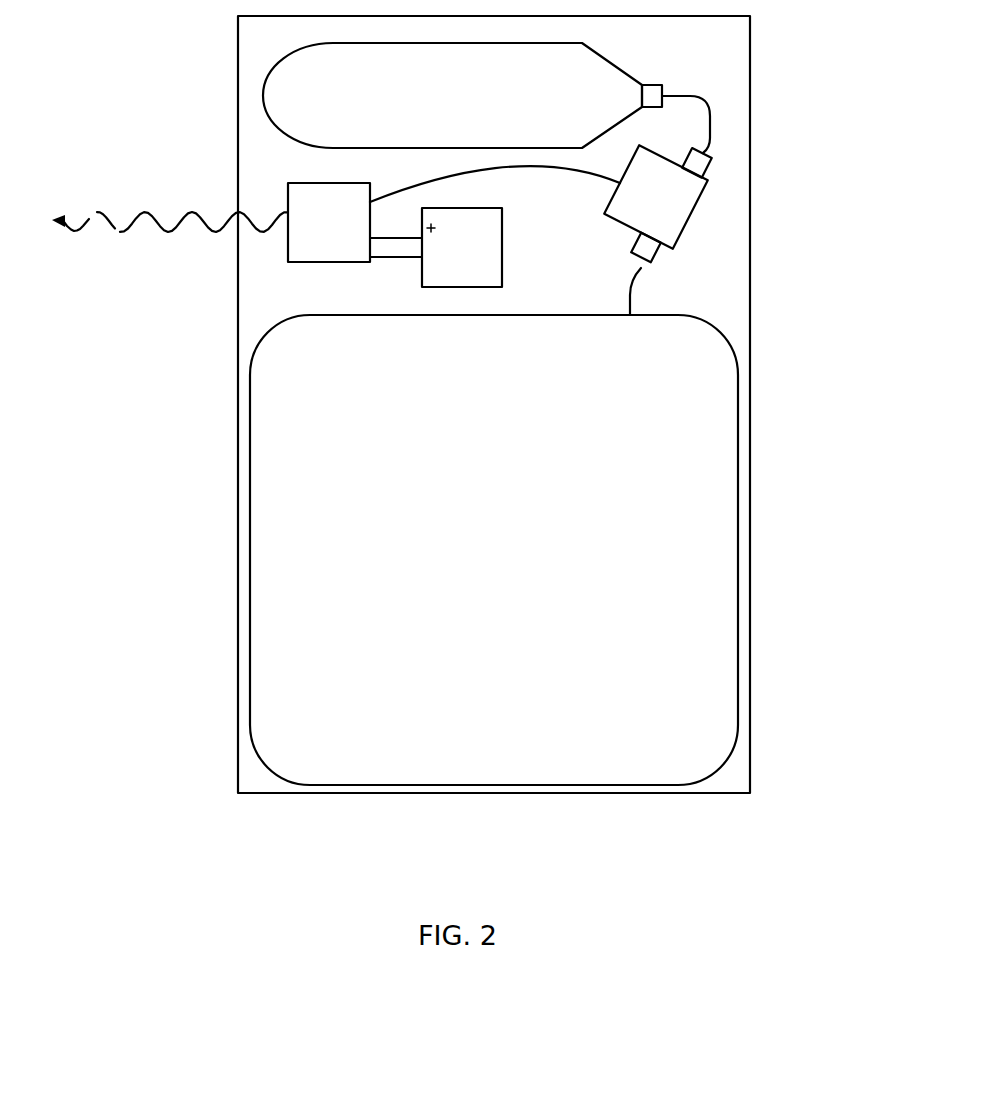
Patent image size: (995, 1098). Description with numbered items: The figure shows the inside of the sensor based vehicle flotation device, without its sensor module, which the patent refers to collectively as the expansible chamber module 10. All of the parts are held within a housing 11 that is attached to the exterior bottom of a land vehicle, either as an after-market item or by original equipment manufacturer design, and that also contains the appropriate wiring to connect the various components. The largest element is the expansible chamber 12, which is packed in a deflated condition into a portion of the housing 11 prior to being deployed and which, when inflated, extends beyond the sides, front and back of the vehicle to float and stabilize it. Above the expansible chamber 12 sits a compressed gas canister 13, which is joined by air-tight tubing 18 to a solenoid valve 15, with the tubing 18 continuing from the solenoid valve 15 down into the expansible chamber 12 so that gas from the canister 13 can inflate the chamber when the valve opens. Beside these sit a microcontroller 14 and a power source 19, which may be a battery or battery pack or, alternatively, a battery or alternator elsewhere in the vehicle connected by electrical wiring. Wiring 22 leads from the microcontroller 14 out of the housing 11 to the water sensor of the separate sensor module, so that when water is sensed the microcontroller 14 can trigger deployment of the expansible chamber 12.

The expansible chamber module 10 is at (208, 684).
The housing 11 is at (760, 72).
The expansible chamber 12 is at (240, 506).
The compressed gas canister 13 is at (252, 105).
The microcontroller 14 is at (278, 262).
The solenoid valve 15 is at (593, 209).
The air-tight tubing 18 is at (682, 86).
The power source 19 is at (412, 283).
The wiring 22 is at (140, 198).